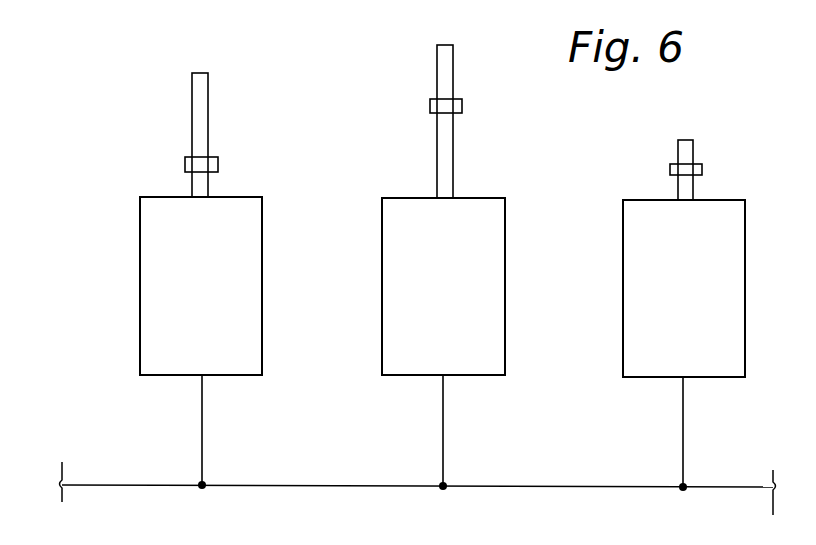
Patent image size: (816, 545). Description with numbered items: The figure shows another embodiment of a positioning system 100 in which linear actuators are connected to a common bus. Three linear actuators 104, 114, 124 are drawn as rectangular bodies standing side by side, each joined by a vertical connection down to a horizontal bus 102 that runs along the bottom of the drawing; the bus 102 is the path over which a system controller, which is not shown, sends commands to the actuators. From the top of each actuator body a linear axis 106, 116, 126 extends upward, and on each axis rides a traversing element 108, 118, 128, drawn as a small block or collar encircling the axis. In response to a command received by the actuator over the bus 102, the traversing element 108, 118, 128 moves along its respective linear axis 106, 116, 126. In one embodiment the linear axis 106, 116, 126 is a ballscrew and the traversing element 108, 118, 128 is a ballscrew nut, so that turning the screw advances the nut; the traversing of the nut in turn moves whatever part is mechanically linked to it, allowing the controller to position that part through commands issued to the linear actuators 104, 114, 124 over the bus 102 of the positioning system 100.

The positioning system 100 is at (98, 70).
The bus 102 is at (130, 486).
The linear actuator 104 is at (140, 352).
The linear axis 106 is at (192, 113).
The traversing element 108 is at (185, 166).
The linear actuator 114 is at (382, 363).
The linear axis 116 is at (437, 150).
The traversing element 118 is at (430, 106).
The linear actuator 124 is at (623, 367).
The linear axis 126 is at (678, 152).
The traversing element 128 is at (670, 170).